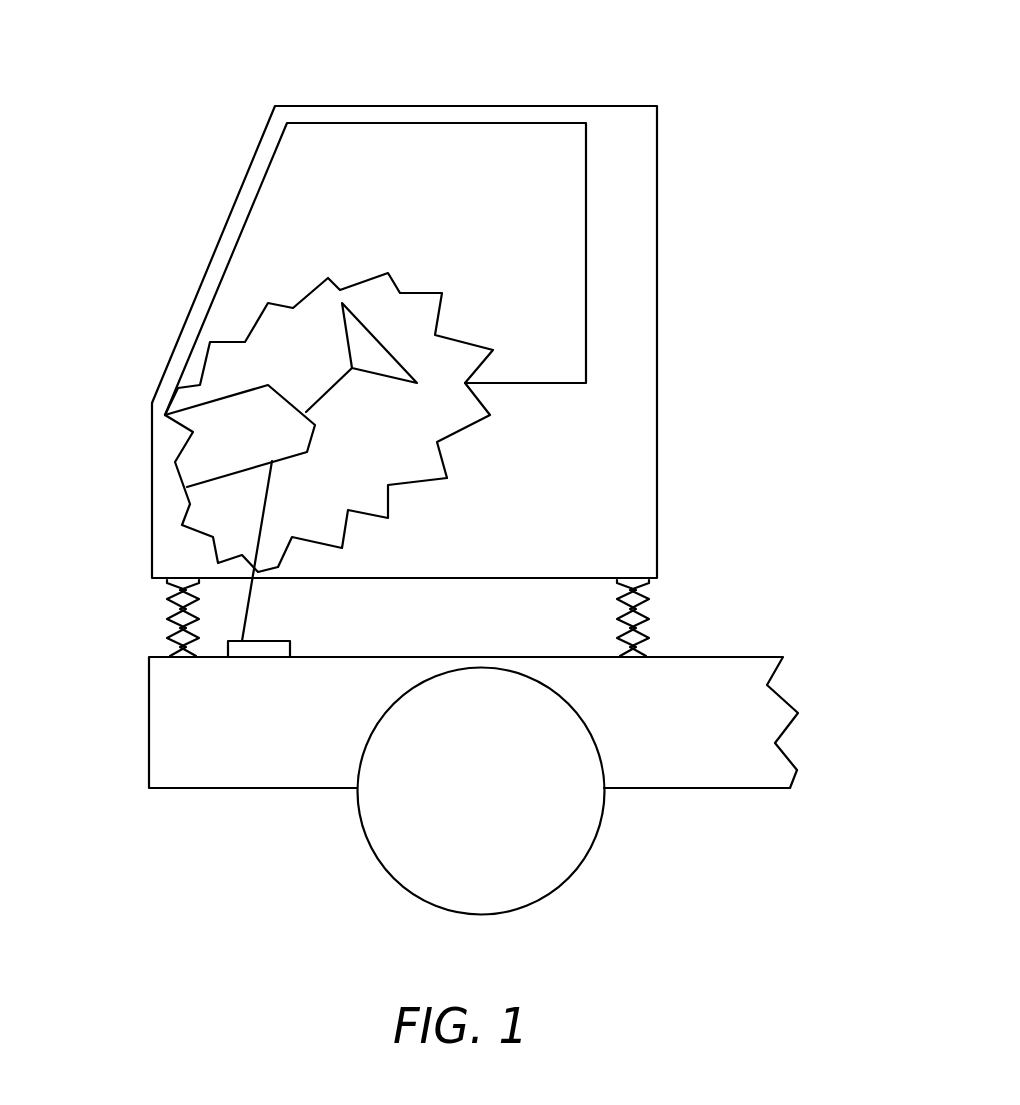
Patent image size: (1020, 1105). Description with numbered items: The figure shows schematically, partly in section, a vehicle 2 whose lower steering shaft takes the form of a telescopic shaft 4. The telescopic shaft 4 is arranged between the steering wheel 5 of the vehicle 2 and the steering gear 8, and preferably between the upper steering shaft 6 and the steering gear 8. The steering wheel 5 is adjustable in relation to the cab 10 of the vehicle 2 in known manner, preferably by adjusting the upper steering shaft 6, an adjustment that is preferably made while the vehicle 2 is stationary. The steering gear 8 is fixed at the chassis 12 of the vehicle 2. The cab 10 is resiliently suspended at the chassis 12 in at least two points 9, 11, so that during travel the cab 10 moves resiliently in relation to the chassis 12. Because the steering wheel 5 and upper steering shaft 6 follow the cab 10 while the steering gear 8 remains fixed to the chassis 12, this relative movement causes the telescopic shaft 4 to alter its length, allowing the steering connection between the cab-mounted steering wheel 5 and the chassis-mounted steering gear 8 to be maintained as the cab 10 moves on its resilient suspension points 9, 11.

The vehicle 2 is at (735, 385).
The telescopic shaft 4 is at (260, 528).
The steering wheel 5 is at (375, 338).
The upper steering shaft 6 is at (325, 392).
The steering gear 8 is at (262, 650).
The suspension point 9 is at (167, 603).
The cab 10 is at (635, 283).
The suspension point 11 is at (650, 618).
The chassis 12 is at (682, 752).